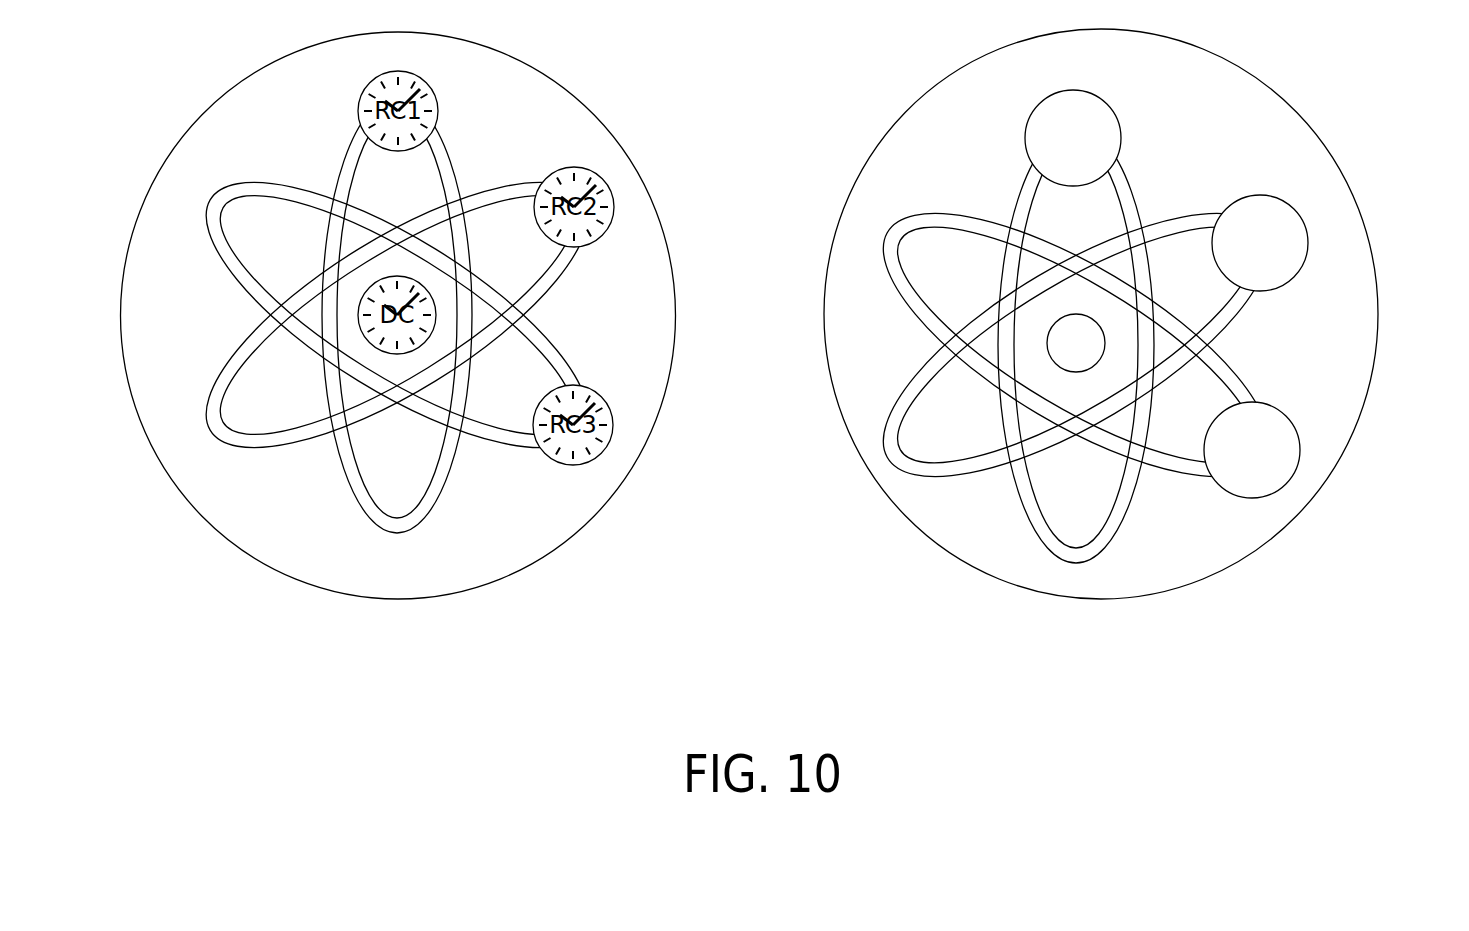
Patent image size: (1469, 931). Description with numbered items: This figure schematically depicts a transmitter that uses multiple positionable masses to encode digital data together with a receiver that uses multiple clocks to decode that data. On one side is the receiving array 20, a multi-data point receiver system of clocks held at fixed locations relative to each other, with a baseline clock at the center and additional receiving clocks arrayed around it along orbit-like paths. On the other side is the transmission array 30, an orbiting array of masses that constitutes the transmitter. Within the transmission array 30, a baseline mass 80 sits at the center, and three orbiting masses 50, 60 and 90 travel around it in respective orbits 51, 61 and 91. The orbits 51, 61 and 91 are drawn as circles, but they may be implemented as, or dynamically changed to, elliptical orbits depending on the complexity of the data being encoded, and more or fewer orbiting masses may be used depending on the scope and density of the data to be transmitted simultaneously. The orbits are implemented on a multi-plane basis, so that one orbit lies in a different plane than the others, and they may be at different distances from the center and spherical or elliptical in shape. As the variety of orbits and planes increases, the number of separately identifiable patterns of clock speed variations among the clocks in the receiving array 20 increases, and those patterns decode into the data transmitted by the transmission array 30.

The receiving array of clocks 20 is at (264, 62).
The transmission array 30 is at (846, 432).
The orbiting mass 50 is at (1293, 202).
The orbit 51 is at (1238, 314).
The orbiting mass 60 is at (1237, 501).
The orbit 61 is at (1172, 474).
The baseline mass 80 is at (1049, 319).
The orbiting mass 90 is at (1104, 96).
The orbit 91 is at (1133, 179).